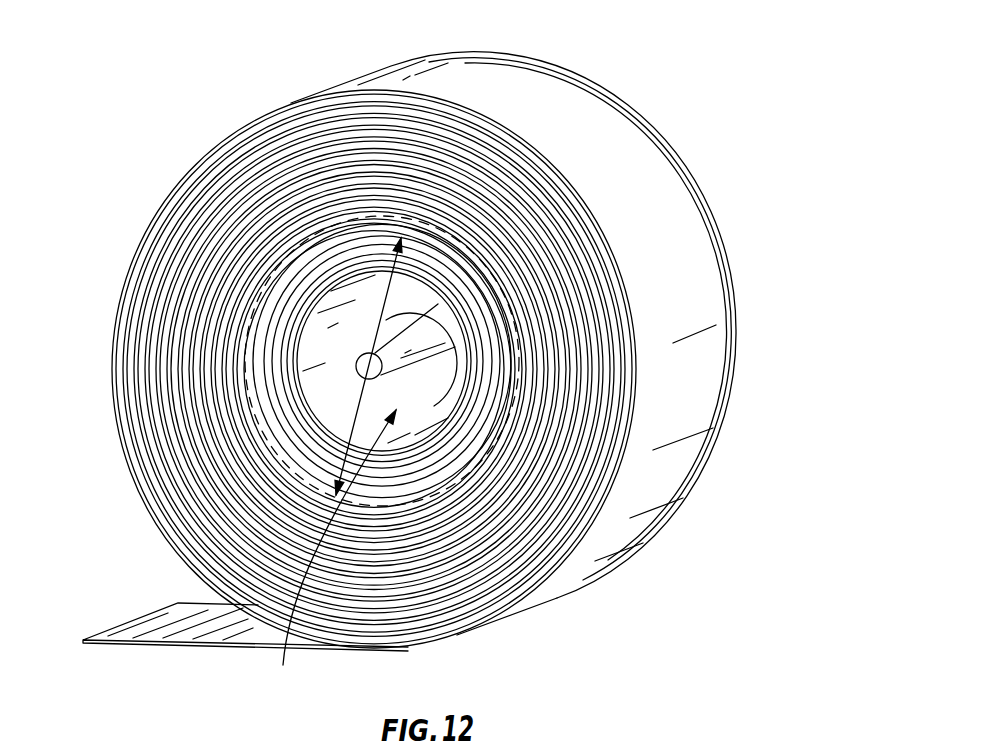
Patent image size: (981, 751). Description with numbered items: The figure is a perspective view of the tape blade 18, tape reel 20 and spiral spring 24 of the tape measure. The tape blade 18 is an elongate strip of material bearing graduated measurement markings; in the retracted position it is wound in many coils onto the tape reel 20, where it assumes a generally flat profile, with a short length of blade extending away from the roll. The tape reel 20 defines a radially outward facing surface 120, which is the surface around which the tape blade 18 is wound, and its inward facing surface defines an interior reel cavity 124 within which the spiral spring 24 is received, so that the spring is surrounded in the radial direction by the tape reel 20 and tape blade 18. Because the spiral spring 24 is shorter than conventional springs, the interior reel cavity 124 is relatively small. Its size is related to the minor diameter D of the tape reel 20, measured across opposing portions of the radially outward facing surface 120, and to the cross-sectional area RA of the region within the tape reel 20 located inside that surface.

The radially outward facing surface 120 is at (347, 223).
The interior reel cavity 124 is at (280, 437).
The spiral spring 24 is at (273, 300).
The minor diameter D is at (362, 333).
The cross-sectional area RA is at (329, 554).
The tape reel 20 is at (713, 438).
The tape blade 18 is at (552, 573).